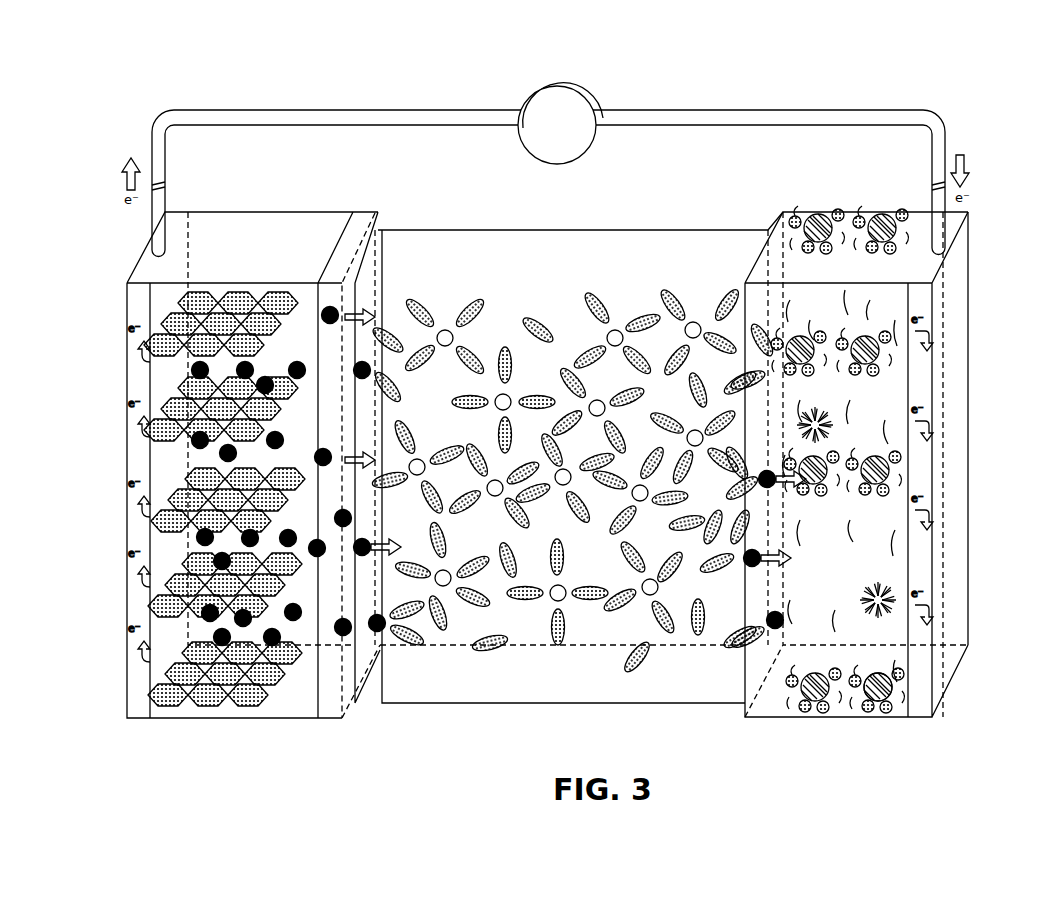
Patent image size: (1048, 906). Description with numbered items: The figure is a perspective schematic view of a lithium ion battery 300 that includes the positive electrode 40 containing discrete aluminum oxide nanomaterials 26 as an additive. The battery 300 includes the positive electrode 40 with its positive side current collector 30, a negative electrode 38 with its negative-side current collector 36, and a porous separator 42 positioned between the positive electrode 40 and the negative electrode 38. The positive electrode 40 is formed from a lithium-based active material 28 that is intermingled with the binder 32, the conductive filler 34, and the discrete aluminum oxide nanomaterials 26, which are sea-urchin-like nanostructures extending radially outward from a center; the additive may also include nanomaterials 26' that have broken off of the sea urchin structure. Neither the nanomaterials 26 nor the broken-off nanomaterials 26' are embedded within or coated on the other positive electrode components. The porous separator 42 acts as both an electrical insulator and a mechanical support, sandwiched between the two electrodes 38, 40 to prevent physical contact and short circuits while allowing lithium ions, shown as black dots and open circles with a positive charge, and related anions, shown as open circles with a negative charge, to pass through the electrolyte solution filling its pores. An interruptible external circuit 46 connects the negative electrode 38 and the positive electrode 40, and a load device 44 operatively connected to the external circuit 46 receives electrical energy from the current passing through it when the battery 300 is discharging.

The lithium ion battery 300 is at (958, 125).
The external circuit 46 is at (373, 110).
The load device 44 is at (560, 86).
The negative electrode 38 is at (268, 192).
The negative-side current collector 36 is at (137, 683).
The porous separator 42 is at (620, 250).
The positive electrode 40 is at (830, 190).
The positive side current collector 30 is at (955, 265).
The aluminum oxide nanomaterials 26 is at (890, 427).
The nanomaterials 26' is at (908, 454).
The binder 32 is at (877, 660).
The lithium-based active material 28 is at (882, 683).
The conductive filler 34 is at (812, 717).